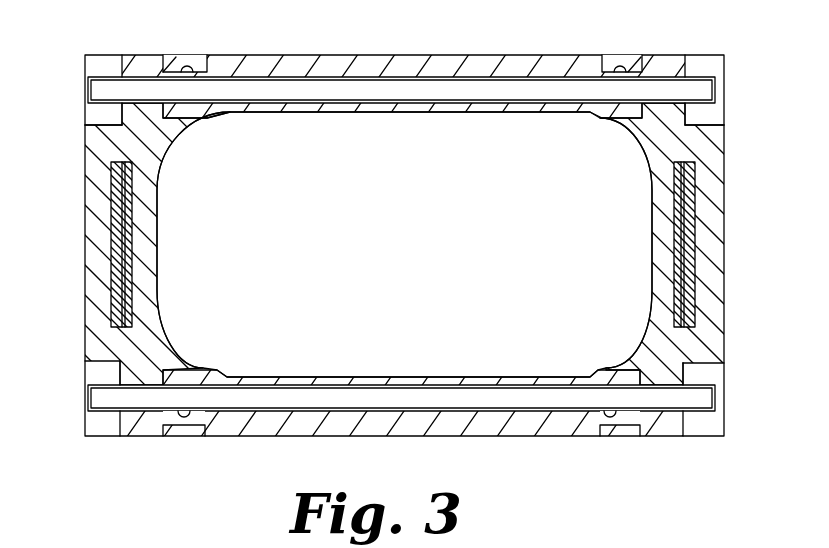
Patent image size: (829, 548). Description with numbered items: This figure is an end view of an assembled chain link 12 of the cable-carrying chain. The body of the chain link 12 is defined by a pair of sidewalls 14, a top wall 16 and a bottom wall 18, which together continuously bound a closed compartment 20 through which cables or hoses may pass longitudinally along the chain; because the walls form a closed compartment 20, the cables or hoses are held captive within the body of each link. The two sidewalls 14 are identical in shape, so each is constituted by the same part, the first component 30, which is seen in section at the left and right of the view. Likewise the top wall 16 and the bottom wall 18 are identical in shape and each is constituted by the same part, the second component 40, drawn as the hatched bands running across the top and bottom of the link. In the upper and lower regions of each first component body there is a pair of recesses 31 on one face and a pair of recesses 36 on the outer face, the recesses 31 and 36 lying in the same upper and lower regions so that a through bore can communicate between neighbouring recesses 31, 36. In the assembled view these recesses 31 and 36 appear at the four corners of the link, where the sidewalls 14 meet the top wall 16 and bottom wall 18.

The chain link 12 is at (752, 138).
The sidewall 14 is at (80, 323).
The top wall 16 is at (450, 47).
The bottom wall 18 is at (385, 447).
The compartment 20 is at (413, 181).
The first component 30 is at (90, 203).
The recess 31 is at (190, 68).
The recess 36 is at (95, 63).
The second component 40 is at (578, 63).